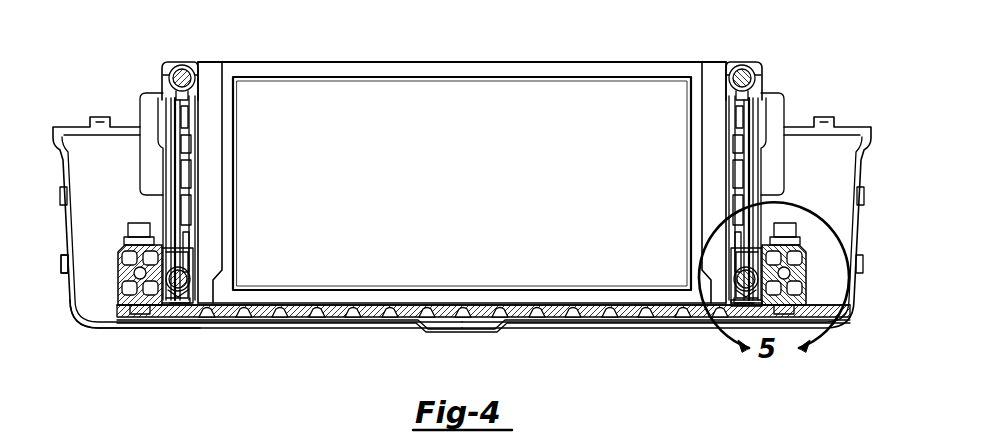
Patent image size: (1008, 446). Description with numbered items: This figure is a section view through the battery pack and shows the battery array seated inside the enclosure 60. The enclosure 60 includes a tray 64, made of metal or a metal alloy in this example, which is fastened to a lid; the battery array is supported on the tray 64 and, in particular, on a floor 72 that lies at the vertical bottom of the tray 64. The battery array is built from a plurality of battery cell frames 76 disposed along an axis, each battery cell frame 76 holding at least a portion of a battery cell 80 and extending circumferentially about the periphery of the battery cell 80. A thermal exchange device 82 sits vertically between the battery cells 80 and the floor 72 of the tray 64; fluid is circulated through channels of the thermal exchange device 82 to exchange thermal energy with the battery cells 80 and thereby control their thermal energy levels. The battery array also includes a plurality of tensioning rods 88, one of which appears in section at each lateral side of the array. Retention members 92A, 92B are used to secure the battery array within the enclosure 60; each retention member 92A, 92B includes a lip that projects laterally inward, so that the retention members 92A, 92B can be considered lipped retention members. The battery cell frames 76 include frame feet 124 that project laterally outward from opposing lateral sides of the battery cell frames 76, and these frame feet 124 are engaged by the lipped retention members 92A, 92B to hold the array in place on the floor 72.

The enclosure 60 is at (68, 215).
The tray 64 is at (68, 285).
The floor 72 is at (99, 320).
The battery cell frames 76 is at (714, 76).
The battery cell 80 is at (475, 191).
The thermal exchange device 82 is at (445, 309).
The tensioning rods 88 is at (735, 275).
The retention member 92A is at (798, 230).
The retention member 92B is at (128, 232).
The frame feet 124 is at (745, 303).